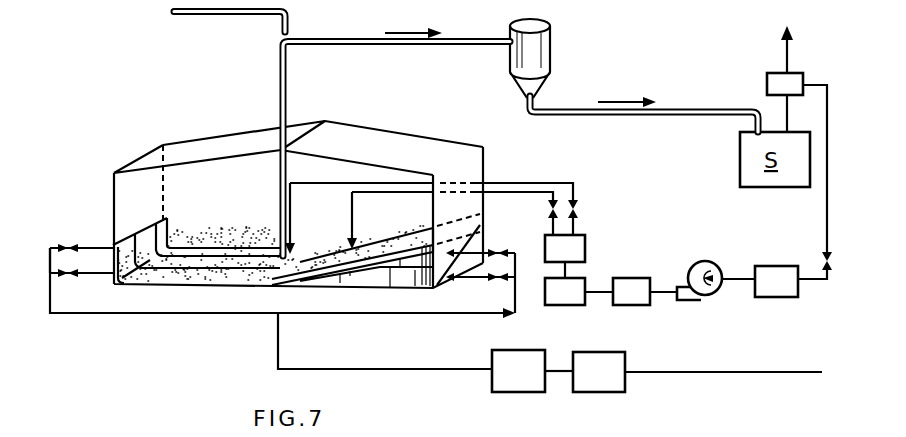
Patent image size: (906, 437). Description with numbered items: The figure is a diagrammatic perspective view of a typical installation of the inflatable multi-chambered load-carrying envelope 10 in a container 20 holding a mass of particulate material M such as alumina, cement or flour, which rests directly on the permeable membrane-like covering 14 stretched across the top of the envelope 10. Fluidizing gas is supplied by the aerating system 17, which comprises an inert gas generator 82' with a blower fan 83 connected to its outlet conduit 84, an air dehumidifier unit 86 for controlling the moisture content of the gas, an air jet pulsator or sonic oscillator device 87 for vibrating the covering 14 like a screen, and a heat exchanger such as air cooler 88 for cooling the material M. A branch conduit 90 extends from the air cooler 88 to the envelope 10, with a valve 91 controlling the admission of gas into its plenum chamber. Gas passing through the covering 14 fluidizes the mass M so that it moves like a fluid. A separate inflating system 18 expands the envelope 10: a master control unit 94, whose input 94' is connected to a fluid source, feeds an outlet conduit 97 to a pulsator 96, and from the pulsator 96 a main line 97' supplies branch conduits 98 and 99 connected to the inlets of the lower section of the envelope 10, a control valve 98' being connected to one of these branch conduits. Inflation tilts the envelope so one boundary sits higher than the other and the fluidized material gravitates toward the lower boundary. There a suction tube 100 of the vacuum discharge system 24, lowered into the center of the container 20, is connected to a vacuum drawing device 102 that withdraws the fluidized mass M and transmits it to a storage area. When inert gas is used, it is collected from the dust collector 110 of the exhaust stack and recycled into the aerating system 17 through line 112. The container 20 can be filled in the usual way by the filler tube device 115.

The inflatable multi-chambered load-carrying envelope 10 is at (372, 281).
The permeable membrane-like covering 14 is at (144, 228).
The aerating system 17 is at (614, 262).
The inflating system 18 is at (654, 381).
The container 20 is at (115, 155).
The vacuum discharge system 24 is at (302, 102).
The inert gas generator 82' is at (807, 208).
The blower fan 83 is at (700, 296).
The outlet conduit 84 is at (742, 281).
The air dehumidifier unit 86 is at (637, 301).
The air jet pulsator or sonic oscillator device 87 is at (567, 301).
The air cooler (heat exchanger) 88 is at (581, 246).
The branch conduit 90 is at (519, 191).
The valve 91 is at (556, 203).
The master control unit 94 is at (619, 358).
The input of control unit 94' is at (690, 355).
The pulsator 96 is at (503, 357).
The outlet conduit 97 is at (545, 347).
The main line 97' is at (385, 341).
The branch conduit 98 is at (282, 283).
The control valve 98' is at (41, 246).
The branch conduit 99 is at (103, 246).
The suction tube 100 is at (280, 55).
The vacuum drawing or pulling device 102 is at (548, 66).
The dust collector 110 is at (779, 80).
The line 112 is at (830, 84).
The filler tube device 115 is at (234, 18).
The particulate material M is at (264, 230).